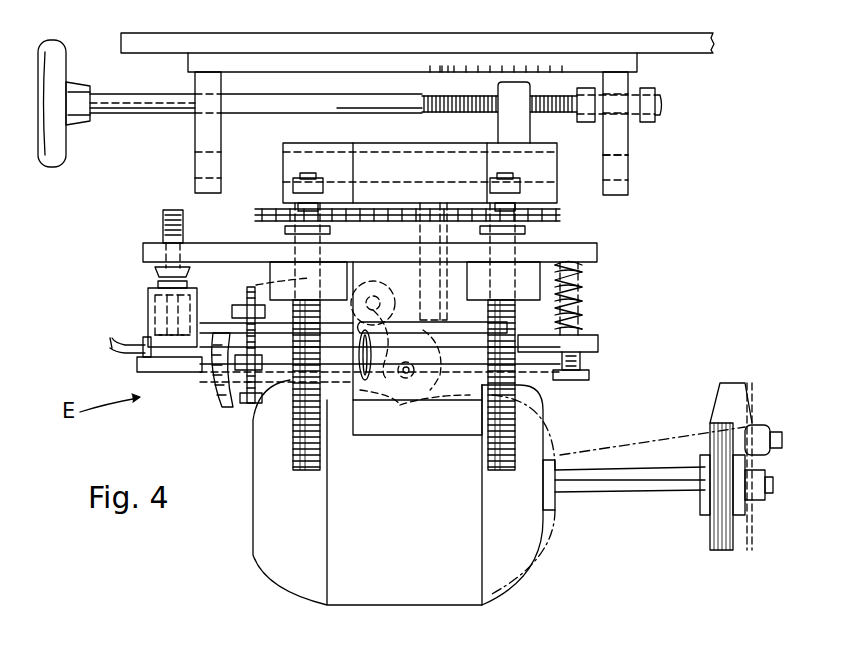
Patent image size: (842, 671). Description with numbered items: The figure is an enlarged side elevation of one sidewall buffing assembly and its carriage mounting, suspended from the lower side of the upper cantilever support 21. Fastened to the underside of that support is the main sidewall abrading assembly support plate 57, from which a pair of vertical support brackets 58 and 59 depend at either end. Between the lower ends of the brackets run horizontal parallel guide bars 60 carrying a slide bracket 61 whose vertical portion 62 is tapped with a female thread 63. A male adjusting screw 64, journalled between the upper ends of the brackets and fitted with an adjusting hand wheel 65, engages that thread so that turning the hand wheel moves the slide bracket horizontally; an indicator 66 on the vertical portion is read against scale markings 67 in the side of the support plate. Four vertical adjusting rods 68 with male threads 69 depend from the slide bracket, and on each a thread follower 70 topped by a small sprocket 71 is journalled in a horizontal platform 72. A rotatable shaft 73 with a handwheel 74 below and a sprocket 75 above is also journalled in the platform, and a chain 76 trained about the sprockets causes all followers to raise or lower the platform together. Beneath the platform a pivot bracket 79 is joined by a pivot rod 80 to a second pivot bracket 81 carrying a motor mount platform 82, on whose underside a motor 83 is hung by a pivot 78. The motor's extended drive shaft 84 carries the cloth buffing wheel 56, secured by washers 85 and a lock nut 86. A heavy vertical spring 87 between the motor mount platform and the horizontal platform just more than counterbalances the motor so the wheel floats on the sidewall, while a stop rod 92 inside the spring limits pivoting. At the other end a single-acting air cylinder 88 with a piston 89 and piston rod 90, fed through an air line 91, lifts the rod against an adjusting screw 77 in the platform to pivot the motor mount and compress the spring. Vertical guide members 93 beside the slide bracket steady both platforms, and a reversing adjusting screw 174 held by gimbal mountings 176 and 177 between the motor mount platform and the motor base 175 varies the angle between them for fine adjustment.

The upper cantilever support 21 is at (572, 38).
The cloth buffing wheel 56 is at (735, 400).
The main sidewall abrading assembly support plate 57 is at (640, 66).
The vertical support bracket 58 is at (205, 122).
The vertical support bracket 59 is at (622, 170).
The horizontal parallel guide bars 60 is at (610, 157).
The slide bracket 61 is at (332, 145).
The vertical portion 62 is at (572, 122).
The female thread 63 is at (500, 118).
The male adjusting screw 64 is at (157, 93).
The adjusting hand wheel 65 is at (50, 42).
The indicator 66 is at (512, 82).
The scale markings 67 is at (446, 68).
The vertical adjusting rods 68 is at (307, 470).
The male threads 69 is at (295, 460).
The thread follower 70 is at (265, 262).
The small sprocket 71 is at (262, 243).
The horizontal platform 72 is at (598, 255).
The rotatable shaft 73 is at (412, 290).
The handwheel 74 is at (470, 395).
The sprocket 75 is at (434, 212).
The chain 76 is at (296, 212).
The adjusting screw 77 is at (155, 272).
The pivot 78 is at (400, 390).
The pivot bracket 79 is at (267, 279).
The pivot rod 80 is at (405, 377).
The second pivot bracket 81 is at (425, 364).
The motor mount platform 82 is at (137, 362).
The motor 83 is at (370, 605).
The extended drive shaft 84 is at (652, 492).
The washers 85 is at (700, 500).
The lock nut 86 is at (750, 505).
The heavy vertical spring 87 is at (583, 300).
The single-acting air cylinder 88 is at (148, 312).
The piston 89 is at (160, 327).
The piston rod 90 is at (155, 296).
The air line 91 is at (115, 348).
The stop rod 92 is at (588, 360).
The vertical guide members 93 is at (405, 435).
The reversing adjusting screw 174 is at (242, 400).
The base 175 is at (560, 375).
The gimbal mounting 176 is at (245, 306).
The gimbal mounting 177 is at (215, 380).